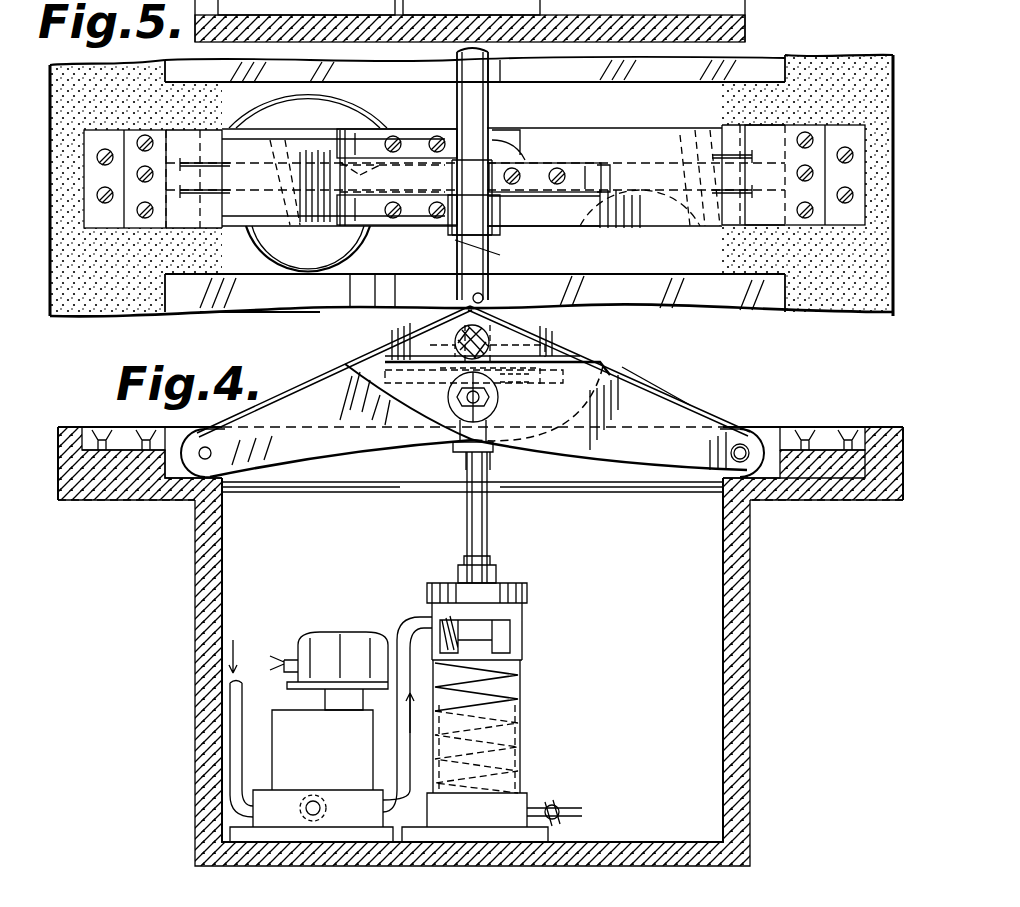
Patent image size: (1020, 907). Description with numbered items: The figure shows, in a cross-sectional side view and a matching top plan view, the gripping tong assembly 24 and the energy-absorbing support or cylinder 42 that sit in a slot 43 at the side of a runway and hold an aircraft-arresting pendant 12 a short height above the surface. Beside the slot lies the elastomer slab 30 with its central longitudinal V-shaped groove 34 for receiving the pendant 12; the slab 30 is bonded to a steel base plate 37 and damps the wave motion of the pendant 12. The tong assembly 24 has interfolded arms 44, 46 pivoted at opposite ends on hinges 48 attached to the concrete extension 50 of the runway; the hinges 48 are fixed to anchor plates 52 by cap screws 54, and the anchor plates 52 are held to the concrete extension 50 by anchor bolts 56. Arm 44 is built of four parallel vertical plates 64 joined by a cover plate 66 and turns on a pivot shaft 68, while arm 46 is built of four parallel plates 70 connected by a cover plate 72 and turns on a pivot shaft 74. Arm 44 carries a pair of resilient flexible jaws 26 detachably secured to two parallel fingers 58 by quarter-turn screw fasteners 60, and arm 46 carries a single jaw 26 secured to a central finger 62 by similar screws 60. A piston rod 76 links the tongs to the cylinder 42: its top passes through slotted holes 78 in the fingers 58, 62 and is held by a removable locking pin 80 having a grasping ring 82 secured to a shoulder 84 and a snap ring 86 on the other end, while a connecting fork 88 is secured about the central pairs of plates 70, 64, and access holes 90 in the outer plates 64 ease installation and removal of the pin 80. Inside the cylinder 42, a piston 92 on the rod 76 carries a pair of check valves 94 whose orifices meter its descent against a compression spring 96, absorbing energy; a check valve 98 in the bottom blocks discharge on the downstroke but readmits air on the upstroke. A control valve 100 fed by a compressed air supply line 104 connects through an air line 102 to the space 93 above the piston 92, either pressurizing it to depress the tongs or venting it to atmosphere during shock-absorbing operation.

In FIG. 5, the pendant 12 is at (490, 258).
In FIG. 4, the pendant 12 is at (490, 336).
In FIG. 5, the gripping tong assembly 24 is at (339, 261).
In FIG. 5, the resilient flexible jaws 26 is at (394, 136).
In FIG. 4, the resilient flexible jaws 26 is at (420, 340).
In FIG. 5, the slab 30 is at (475, 181).
In FIG. 4, the slab 30 is at (373, 465).
In FIG. 5, the V-shaped groove 34 is at (560, 66).
In FIG. 4, the V-shaped groove 34 is at (510, 448).
In FIG. 4, the steel base plate 37 is at (632, 482).
In FIG. 5, the energy-absorbing cylinder 42 is at (528, 241).
In FIG. 4, the energy-absorbing cylinder 42 is at (538, 683).
In FIG. 5, the slot 43 is at (275, 312).
In FIG. 4, the slot 43 is at (732, 664).
In FIG. 5, the arm 44 is at (643, 121).
In FIG. 4, the arm 44 is at (675, 378).
In FIG. 5, the arm 46 is at (292, 118).
In FIG. 4, the arm 46 is at (319, 376).
In FIG. 5, the hinges 48 is at (175, 150).
In FIG. 4, the hinges 48 is at (172, 430).
In FIG. 5, the concrete extension 50 is at (93, 316).
In FIG. 4, the concrete extension 50 is at (62, 425).
In FIG. 5, the anchor plates 52 is at (108, 148).
In FIG. 4, the anchor plates 52 is at (86, 435).
In FIG. 5, the cap screws 54 is at (150, 222).
In FIG. 4, the cap screws 54 is at (148, 420).
In FIG. 5, the anchor bolts 56 is at (100, 192).
In FIG. 4, the anchor bolts 56 is at (85, 490).
In FIG. 5, the fingers 58 is at (607, 179).
In FIG. 4, the fingers 58 is at (495, 338).
In FIG. 5, the quarter-turn screw fasteners 60 is at (440, 140).
In FIG. 4, the quarter-turn screw fasteners 60 is at (392, 342).
In FIG. 5, the central finger 62 is at (339, 195).
In FIG. 5, the parallel vertical plates 64 is at (656, 227).
In FIG. 4, the parallel vertical plates 64 is at (692, 418).
In FIG. 5, the cover plate 66 is at (678, 160).
In FIG. 4, the cover plate 66 is at (643, 390).
In FIG. 5, the pivot shaft 68 is at (742, 197).
In FIG. 4, the pivot shaft 68 is at (740, 447).
In FIG. 5, the parallel plates 70 is at (308, 248).
In FIG. 4, the parallel plates 70 is at (265, 475).
In FIG. 5, the cover plate 72 is at (325, 135).
In FIG. 4, the cover plate 72 is at (302, 382).
In FIG. 5, the pivot shaft 74 is at (232, 235).
In FIG. 4, the pivot shaft 74 is at (205, 460).
In FIG. 4, the piston rod 76 is at (492, 524).
In FIG. 4, the slotted holes 78 is at (448, 388).
In FIG. 5, the removable locking pin 80 is at (494, 160).
In FIG. 4, the removable locking pin 80 is at (500, 388).
In FIG. 5, the grasping ring 82 is at (465, 216).
In FIG. 4, the grasping ring 82 is at (456, 398).
In FIG. 5, the shoulder 84 is at (491, 215).
In FIG. 4, the shoulder 84 is at (500, 404).
In FIG. 5, the removable snap ring 86 is at (515, 72).
In FIG. 5, the connecting fork 88 is at (392, 177).
In FIG. 4, the connecting fork 88 is at (500, 460).
In FIG. 5, the access holes 90 is at (502, 220).
In FIG. 4, the access holes 90 is at (452, 450).
In FIG. 4, the piston 92 is at (520, 660).
In FIG. 4, the space 93 is at (448, 612).
In FIG. 4, the check valves 94 is at (418, 610).
In FIG. 4, the compression spring 96 is at (505, 742).
In FIG. 4, the check valve 98 is at (550, 805).
In FIG. 5, the control valve 100 is at (284, 130).
In FIG. 4, the control valve 100 is at (295, 750).
In FIG. 4, the air line 102 is at (402, 620).
In FIG. 4, the compressed air supply line 104 is at (230, 722).